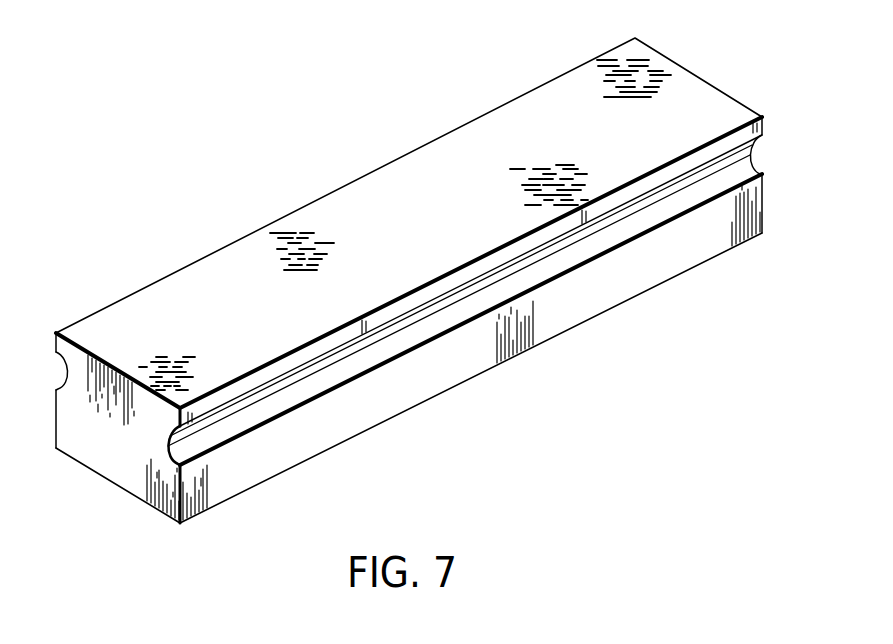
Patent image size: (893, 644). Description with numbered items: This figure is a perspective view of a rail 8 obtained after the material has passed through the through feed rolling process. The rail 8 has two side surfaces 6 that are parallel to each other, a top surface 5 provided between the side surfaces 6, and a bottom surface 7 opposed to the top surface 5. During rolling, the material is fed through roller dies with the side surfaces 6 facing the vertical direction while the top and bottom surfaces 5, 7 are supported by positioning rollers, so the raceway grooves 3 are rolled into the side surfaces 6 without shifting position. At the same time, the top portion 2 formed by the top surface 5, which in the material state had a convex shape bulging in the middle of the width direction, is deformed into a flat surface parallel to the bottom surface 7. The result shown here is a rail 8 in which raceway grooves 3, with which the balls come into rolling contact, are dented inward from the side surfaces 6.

The rail 8 is at (313, 191).
The top surface 5 is at (160, 298).
The top portion 2 is at (85, 348).
The raceway groove 3 is at (62, 382).
The side surface 6 is at (57, 427).
The bottom surface 7 is at (96, 473).